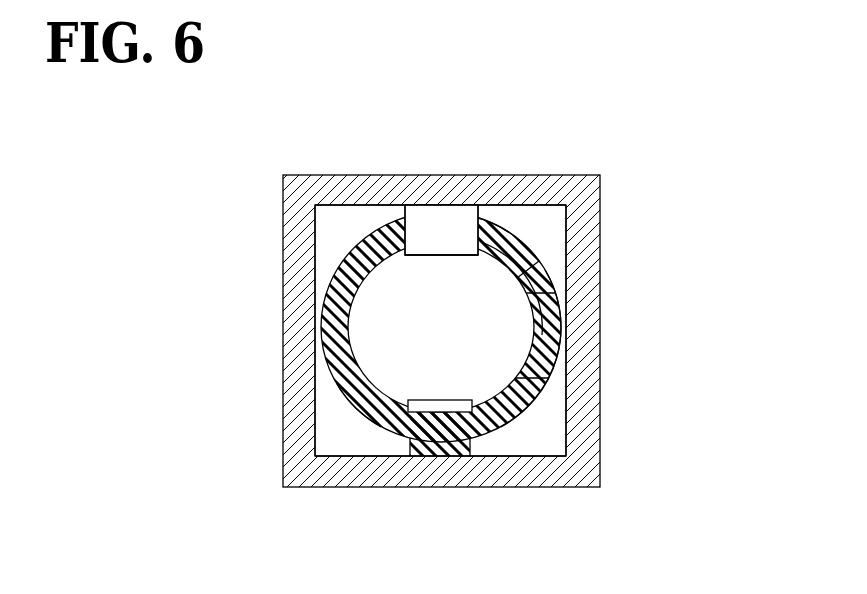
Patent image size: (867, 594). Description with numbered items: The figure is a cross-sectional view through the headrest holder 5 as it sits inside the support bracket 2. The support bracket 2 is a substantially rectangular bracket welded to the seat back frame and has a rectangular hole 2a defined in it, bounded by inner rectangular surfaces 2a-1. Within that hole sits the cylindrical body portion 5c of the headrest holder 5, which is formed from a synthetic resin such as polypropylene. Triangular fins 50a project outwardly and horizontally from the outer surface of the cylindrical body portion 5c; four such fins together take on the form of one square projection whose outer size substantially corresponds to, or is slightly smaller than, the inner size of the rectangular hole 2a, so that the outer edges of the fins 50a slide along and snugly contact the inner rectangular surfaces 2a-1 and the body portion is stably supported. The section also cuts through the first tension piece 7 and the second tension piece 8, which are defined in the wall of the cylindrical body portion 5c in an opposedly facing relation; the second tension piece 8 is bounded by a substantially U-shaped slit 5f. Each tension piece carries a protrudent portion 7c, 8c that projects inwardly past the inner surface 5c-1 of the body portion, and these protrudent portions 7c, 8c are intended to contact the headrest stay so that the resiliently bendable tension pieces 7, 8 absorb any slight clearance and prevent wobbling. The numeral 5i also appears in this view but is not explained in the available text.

The support bracket 2 is at (603, 331).
The rectangular hole 2a is at (364, 212).
The inner rectangular surface 2a-1 is at (362, 452).
The triangular fin 50a is at (326, 212).
The headrest holder 5 is at (553, 257).
The cylindrical body portion 5c is at (557, 380).
The inner surface 5c-1 is at (522, 292).
The U-shaped slit 5f is at (490, 212).
The lower portion of seal ring 5i is at (481, 437).
The first tension piece 7 is at (518, 417).
The protrudent portion 7c is at (440, 400).
The second tension piece 8 is at (446, 207).
The protrudent portion 8c is at (440, 257).